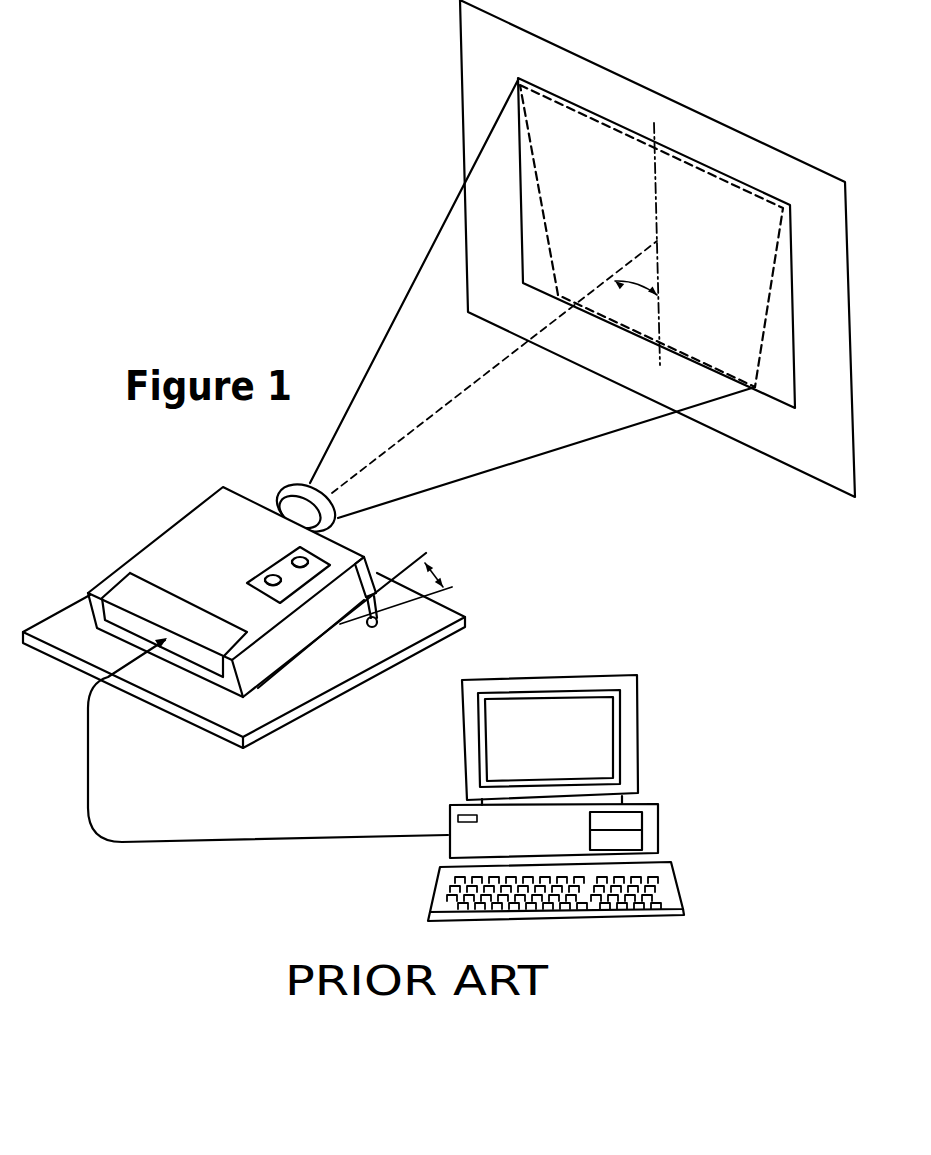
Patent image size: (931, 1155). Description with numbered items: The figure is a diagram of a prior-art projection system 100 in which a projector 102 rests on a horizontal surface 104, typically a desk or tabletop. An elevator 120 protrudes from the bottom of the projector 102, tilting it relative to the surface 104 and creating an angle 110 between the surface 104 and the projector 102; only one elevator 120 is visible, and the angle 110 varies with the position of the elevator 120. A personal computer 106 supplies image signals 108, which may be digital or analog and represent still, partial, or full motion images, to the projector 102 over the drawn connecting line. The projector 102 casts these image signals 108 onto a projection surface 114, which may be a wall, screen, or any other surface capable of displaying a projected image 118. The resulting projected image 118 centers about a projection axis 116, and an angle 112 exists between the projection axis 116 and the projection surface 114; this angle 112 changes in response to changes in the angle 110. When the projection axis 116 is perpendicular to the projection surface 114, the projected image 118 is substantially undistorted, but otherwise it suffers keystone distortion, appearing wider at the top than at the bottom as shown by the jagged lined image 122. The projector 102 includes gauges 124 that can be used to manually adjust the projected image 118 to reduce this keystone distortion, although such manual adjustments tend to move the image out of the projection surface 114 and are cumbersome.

The projection system 100 is at (205, 142).
The projector 102 is at (160, 532).
The horizontal surface 104 is at (67, 603).
The personal computer 106 is at (548, 677).
The image signals 108 is at (292, 835).
The angle 110 is at (436, 578).
The angle 112 is at (632, 288).
The projection surface 114 is at (463, 99).
The projection axis 116 is at (468, 398).
The projected image 118 is at (795, 383).
The elevator 120 is at (371, 625).
The jagged lined image 122 is at (553, 247).
The gauges 124 is at (268, 575).